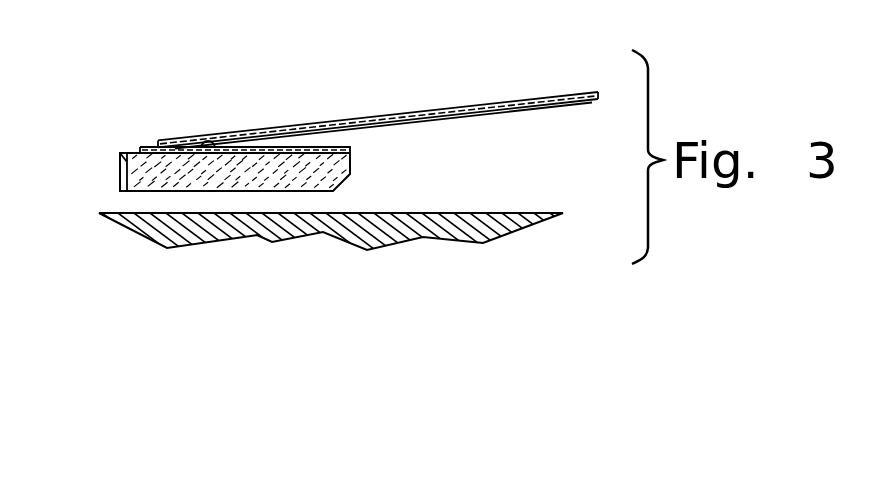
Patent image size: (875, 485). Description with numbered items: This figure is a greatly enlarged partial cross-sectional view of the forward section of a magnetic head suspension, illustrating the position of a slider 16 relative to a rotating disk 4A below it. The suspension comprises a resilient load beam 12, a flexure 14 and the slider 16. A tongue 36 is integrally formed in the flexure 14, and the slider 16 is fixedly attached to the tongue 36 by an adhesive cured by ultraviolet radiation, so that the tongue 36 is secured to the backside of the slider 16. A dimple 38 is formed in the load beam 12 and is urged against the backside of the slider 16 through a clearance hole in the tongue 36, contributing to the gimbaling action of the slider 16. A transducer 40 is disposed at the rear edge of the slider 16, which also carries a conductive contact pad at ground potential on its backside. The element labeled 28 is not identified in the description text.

The load beam 12 is at (397, 110).
The flexure 14 is at (423, 123).
The slider 16 is at (350, 168).
The disk substrate 28 is at (520, 213).
The disk 4A is at (465, 213).
The tongue 36 is at (312, 147).
The dimple 38 is at (207, 140).
The transducer 40 is at (120, 180).